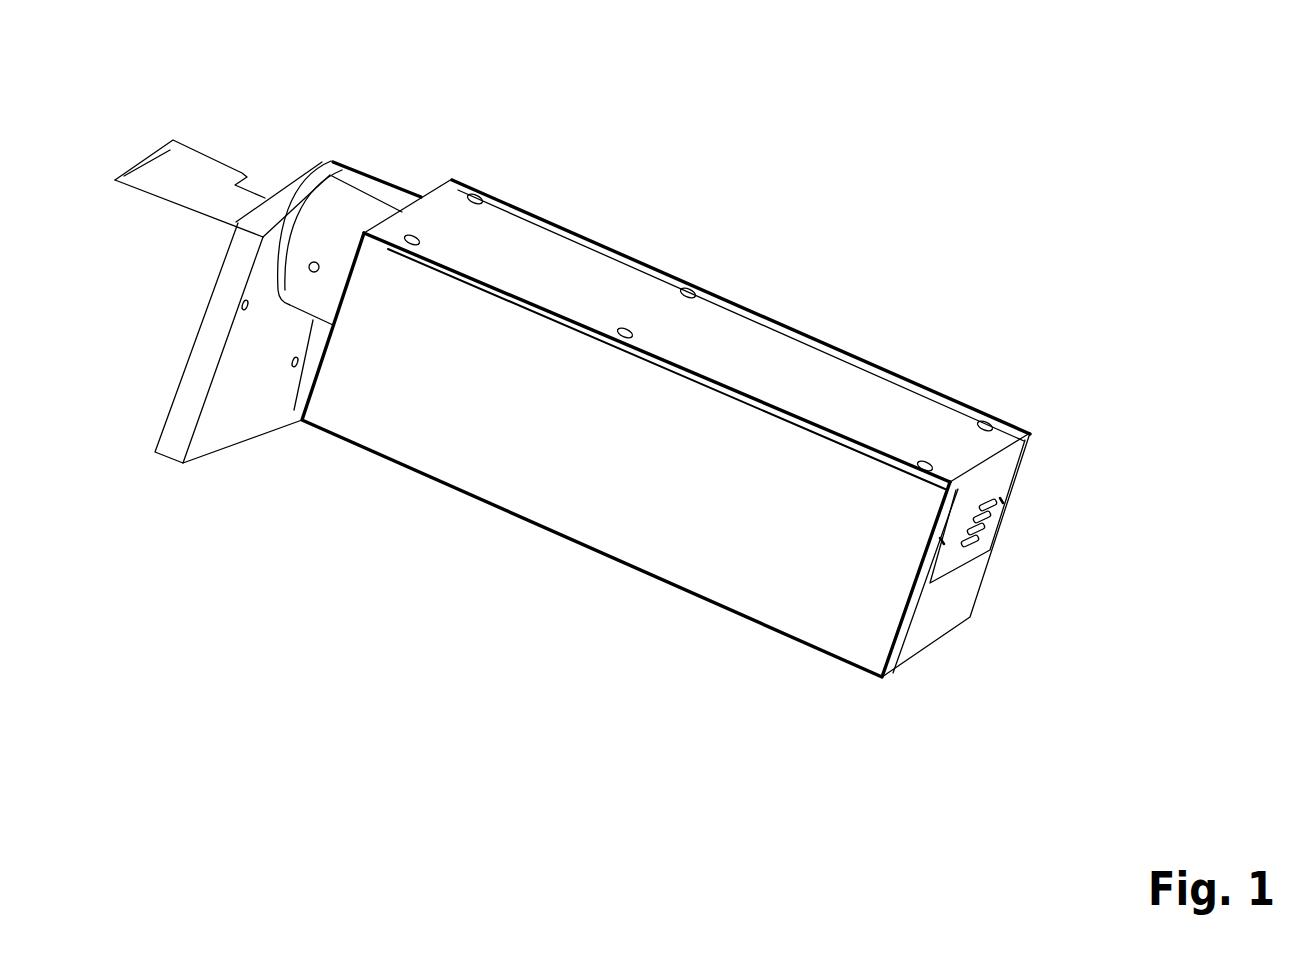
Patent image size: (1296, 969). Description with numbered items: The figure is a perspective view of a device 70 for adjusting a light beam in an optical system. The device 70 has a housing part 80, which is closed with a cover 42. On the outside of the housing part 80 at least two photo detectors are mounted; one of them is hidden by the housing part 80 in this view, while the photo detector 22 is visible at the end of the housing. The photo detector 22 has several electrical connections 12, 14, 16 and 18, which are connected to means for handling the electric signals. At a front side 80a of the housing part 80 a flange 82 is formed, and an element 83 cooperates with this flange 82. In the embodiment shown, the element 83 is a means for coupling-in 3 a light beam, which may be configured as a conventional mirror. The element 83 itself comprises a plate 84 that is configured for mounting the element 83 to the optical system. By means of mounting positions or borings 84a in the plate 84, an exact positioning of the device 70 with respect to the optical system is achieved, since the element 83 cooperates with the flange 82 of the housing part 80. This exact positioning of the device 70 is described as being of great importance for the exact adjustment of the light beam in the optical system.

The means for coupling-in 3 is at (113, 173).
The electrical connection 12 is at (997, 498).
The electrical connection 14 is at (997, 522).
The electrical connection 16 is at (998, 537).
The electrical connection 18 is at (993, 560).
The photo detector 22 is at (983, 487).
The cover 42 is at (803, 360).
The device 70 is at (657, 248).
The housing part 80 is at (492, 603).
The front side 80a is at (424, 190).
The flange 82 is at (385, 188).
The element 83 is at (170, 403).
The plate 84 is at (220, 427).
The mounting positions or borings 84a is at (247, 307).